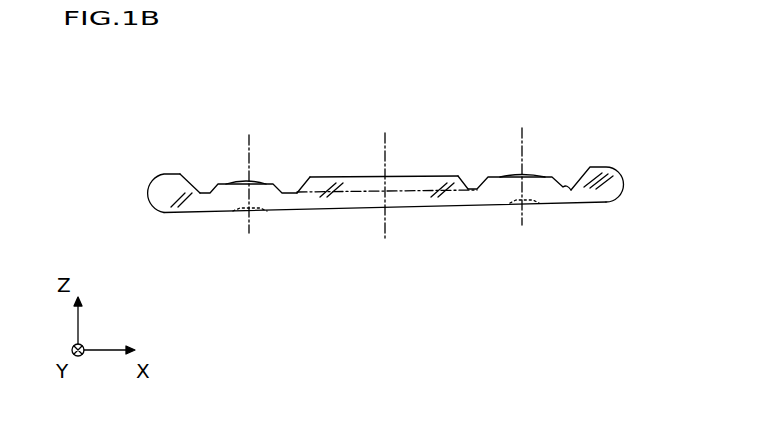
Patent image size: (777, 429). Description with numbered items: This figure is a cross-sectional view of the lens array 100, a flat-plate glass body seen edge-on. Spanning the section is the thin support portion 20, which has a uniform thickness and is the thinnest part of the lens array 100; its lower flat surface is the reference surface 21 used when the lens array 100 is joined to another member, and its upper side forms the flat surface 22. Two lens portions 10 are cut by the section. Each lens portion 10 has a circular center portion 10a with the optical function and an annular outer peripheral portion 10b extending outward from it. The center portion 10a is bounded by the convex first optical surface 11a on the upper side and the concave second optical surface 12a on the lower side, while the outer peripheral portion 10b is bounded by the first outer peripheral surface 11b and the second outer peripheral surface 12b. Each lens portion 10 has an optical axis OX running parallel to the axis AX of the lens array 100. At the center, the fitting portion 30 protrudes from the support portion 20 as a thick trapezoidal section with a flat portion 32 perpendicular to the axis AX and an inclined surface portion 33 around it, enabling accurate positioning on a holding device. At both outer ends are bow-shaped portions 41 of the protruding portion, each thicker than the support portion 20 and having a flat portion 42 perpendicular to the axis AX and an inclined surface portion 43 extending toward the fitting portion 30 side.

The lens array 100 is at (607, 108).
The bow-shaped portion 41 is at (165, 193).
The flat portion 42 is at (167, 174).
The inclined surface portion 43 is at (197, 185).
The first optical surface 11a is at (240, 182).
The first outer peripheral surface 11b is at (273, 183).
The lens portion 10 is at (292, 186).
The center portion 10a is at (516, 176).
The outer peripheral portion 10b is at (535, 177).
The inclined surface portion 33 is at (308, 183).
The flat portion 32 is at (355, 177).
The fitting portion 30 is at (410, 177).
The axis AX is at (385, 140).
The support portion 20 is at (483, 207).
The reference surface 21 is at (207, 212).
The flat surface 22 is at (585, 208).
The second optical surface 12a is at (263, 209).
The second outer peripheral surface 12b is at (215, 212).
The optical axis OX is at (251, 232).